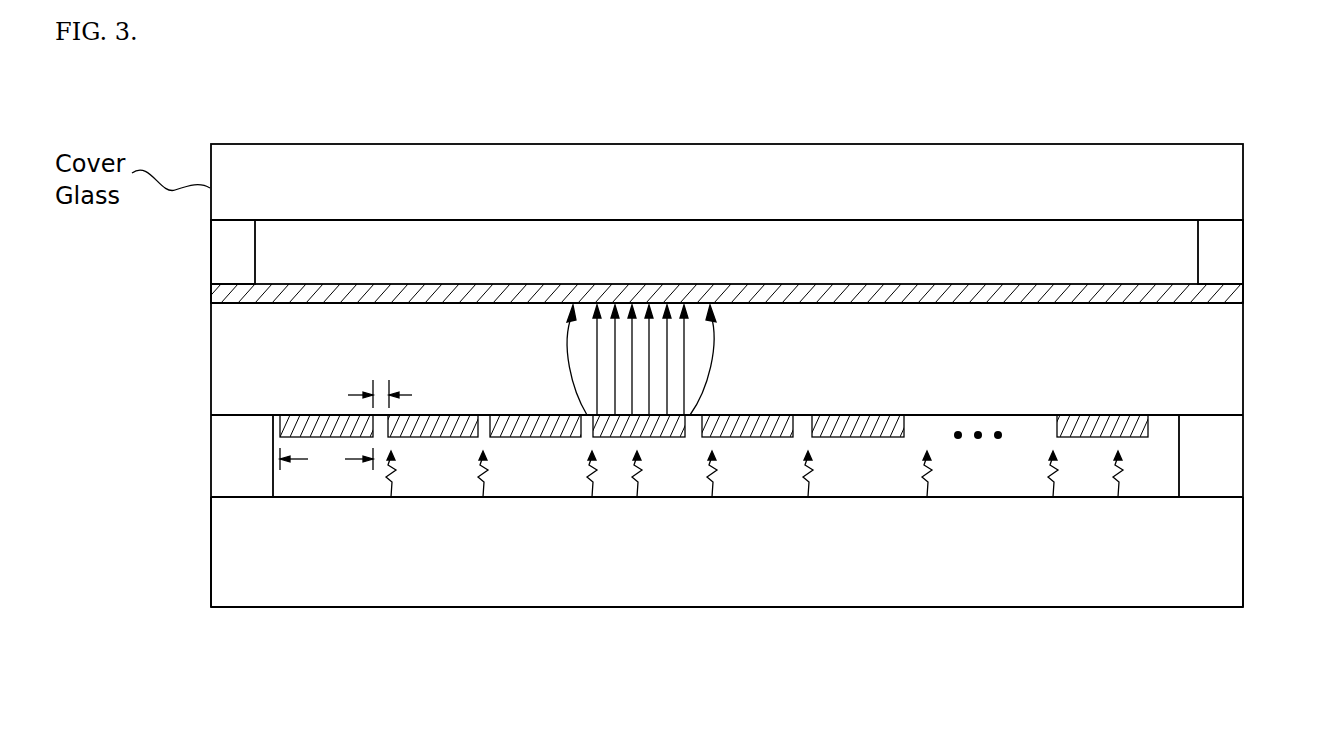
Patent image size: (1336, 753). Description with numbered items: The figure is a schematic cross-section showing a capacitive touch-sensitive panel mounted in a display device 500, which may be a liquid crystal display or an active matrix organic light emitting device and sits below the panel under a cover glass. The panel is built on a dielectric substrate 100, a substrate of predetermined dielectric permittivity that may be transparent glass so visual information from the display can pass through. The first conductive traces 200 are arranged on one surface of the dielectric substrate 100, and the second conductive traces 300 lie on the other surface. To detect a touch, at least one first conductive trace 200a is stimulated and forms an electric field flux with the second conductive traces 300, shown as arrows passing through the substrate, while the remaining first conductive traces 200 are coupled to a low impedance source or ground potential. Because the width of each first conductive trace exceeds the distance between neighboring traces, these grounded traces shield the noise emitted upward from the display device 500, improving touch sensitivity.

The dielectric substrate 100 is at (1225, 372).
The first conductive traces 200 is at (282, 438).
The first conductive trace 200a is at (657, 437).
The second conductive traces 300 is at (1235, 297).
The display device 500 is at (1225, 553).